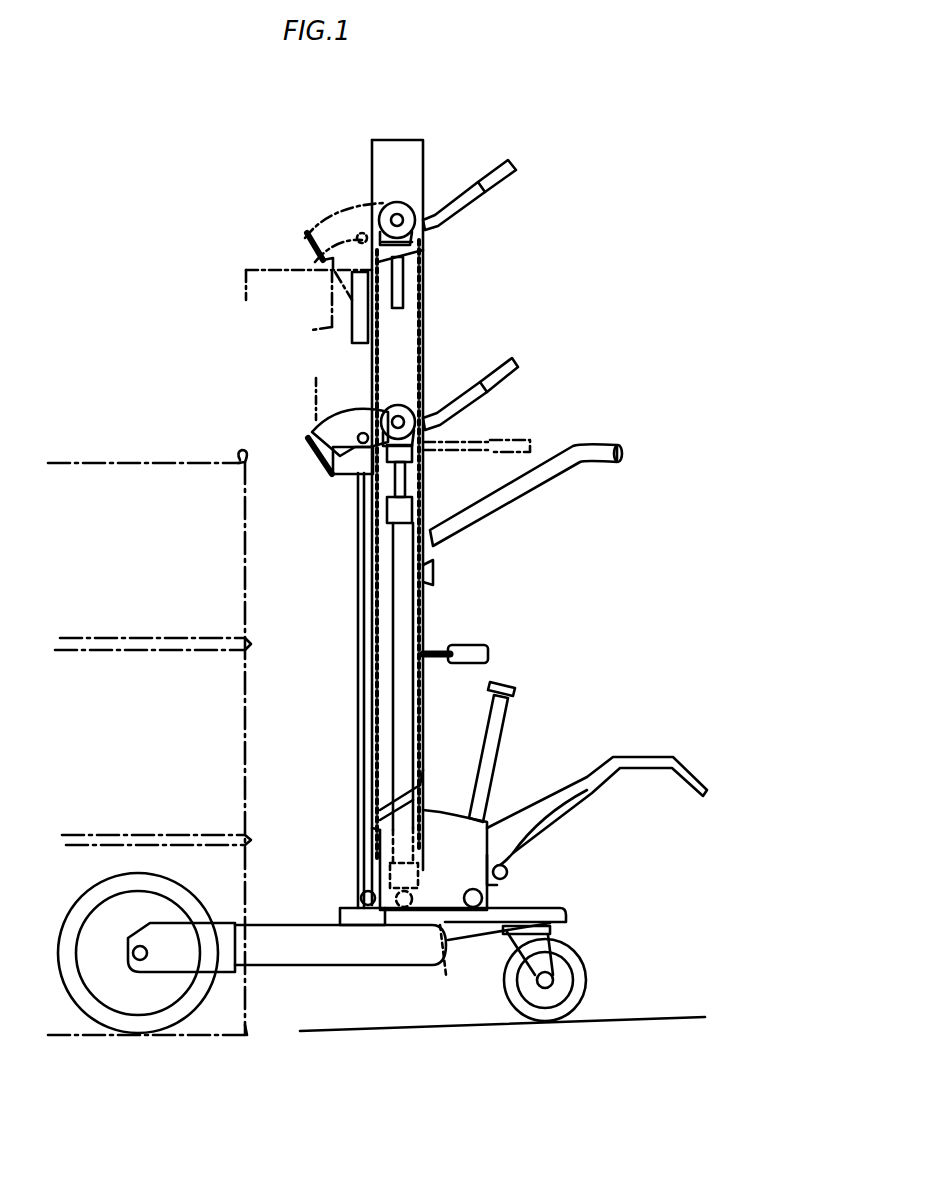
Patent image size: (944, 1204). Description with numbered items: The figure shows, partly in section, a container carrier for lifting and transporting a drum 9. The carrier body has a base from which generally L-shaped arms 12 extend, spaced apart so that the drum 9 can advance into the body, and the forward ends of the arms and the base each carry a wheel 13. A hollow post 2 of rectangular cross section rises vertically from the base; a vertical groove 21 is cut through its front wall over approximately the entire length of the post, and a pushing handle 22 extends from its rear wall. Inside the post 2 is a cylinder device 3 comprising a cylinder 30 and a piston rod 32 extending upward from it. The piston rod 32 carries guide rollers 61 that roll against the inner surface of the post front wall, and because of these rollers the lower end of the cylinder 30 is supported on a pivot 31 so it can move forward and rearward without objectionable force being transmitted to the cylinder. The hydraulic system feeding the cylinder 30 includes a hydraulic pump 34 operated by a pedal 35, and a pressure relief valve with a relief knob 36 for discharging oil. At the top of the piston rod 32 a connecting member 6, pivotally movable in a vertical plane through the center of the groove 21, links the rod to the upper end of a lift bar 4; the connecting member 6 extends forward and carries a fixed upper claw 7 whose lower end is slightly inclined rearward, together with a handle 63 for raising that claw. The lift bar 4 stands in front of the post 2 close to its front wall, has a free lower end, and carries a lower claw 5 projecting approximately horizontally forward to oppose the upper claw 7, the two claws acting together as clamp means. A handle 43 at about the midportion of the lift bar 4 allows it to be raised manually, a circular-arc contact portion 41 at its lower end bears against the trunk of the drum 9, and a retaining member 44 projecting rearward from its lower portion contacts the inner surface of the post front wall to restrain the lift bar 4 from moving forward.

The hollow post 2 is at (398, 168).
The cylinder device 3 is at (430, 607).
The lift bar 4 is at (358, 682).
The lower claw 5 is at (325, 520).
The connecting member 6 is at (335, 418).
The upper claw 7 is at (330, 250).
The drum 9 is at (232, 578).
The L-shaped arm 12 is at (305, 950).
The wheel 13 is at (586, 985).
The vertical groove 21 is at (312, 358).
The pushing handle 22 is at (557, 478).
The cylinder 30 is at (432, 575).
The pivot 31 is at (432, 934).
The piston rod 32 is at (427, 478).
The hydraulic pump 34 is at (510, 872).
The pedal 35 is at (640, 770).
The relief knob 36 is at (515, 688).
The circular-arc contact portion 41 is at (345, 906).
The handle 43 is at (470, 642).
The retaining member 44 is at (415, 785).
The guide roller 61 is at (412, 205).
The handle 63 is at (470, 170).